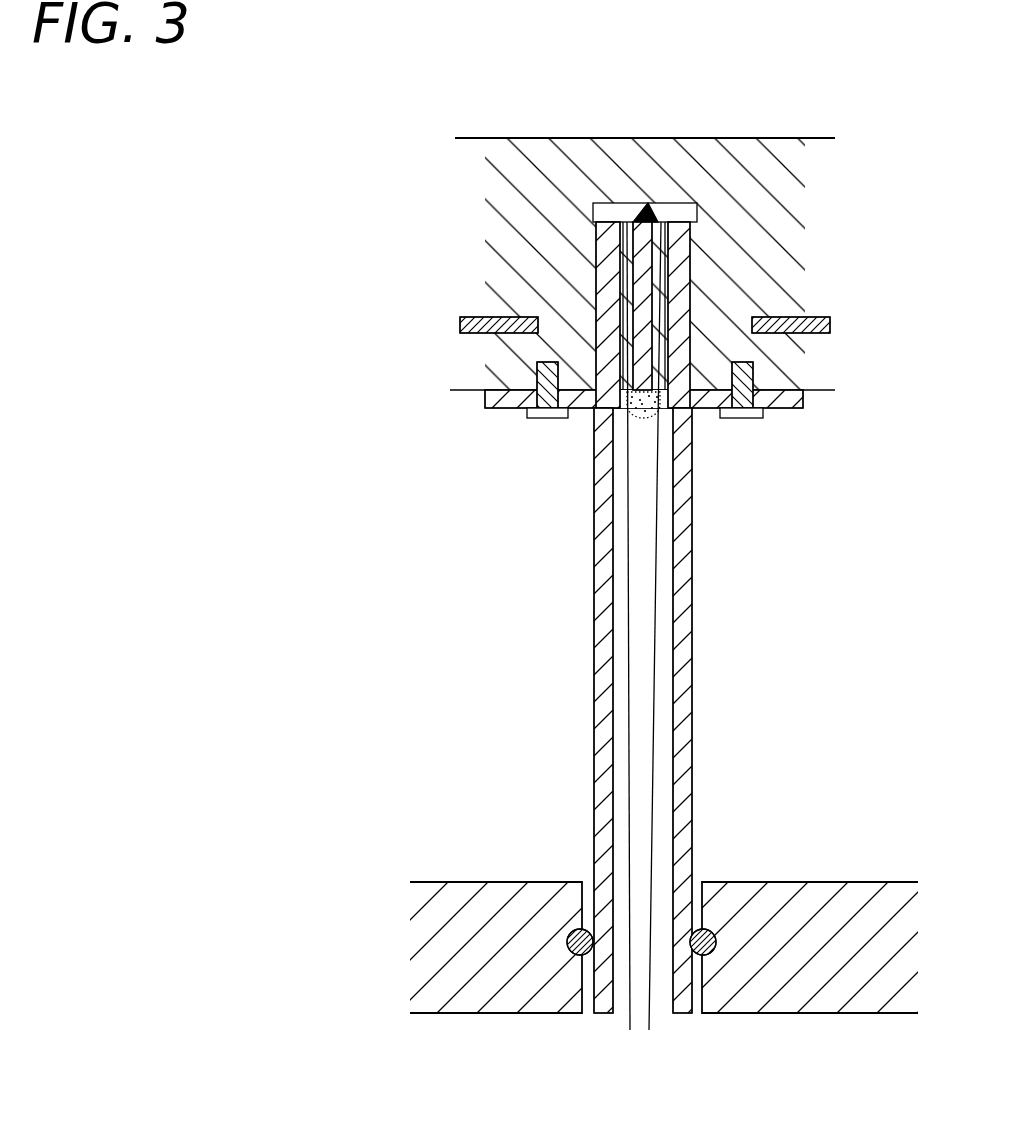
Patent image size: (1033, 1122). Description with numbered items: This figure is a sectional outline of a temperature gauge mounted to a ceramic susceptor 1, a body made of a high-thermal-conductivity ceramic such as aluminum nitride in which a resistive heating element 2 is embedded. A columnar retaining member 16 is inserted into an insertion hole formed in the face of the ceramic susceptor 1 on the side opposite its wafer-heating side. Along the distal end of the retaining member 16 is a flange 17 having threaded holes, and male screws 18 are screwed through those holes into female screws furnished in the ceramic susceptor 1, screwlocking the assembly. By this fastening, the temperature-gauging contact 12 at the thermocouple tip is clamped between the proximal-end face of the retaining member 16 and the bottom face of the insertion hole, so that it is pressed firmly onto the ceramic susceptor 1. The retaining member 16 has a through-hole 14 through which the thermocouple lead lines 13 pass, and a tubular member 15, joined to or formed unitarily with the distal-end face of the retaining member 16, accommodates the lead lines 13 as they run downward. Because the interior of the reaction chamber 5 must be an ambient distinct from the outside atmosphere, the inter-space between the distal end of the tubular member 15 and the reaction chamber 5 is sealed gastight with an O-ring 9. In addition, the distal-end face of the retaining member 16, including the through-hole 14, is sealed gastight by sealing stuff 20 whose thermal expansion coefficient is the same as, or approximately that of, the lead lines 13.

The ceramic susceptor 1 is at (523, 202).
The resistive heating element 2 is at (460, 324).
The reaction chamber 5 is at (465, 892).
The O-ring 9 is at (568, 932).
The temperature-gauging contact 12 is at (686, 165).
The lead lines 13 is at (657, 630).
The through-hole 14 is at (672, 276).
The tubular member 15 is at (692, 643).
The retaining member 16 is at (690, 245).
The flange 17 is at (787, 408).
The male screws 18 is at (738, 418).
The sealing stuff 20 is at (645, 420).